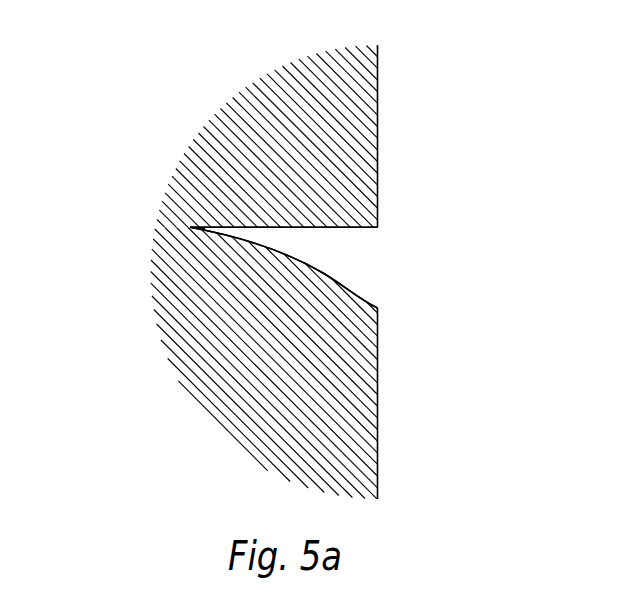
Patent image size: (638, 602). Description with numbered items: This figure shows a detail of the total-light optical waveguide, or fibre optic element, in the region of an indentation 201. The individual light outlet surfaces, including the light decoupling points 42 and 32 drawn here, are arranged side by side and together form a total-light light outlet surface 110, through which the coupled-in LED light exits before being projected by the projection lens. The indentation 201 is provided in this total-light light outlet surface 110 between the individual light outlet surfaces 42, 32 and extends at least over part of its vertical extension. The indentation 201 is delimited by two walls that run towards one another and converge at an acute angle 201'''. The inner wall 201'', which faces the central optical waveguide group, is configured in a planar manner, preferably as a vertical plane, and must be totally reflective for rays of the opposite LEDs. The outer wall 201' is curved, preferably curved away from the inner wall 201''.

The light decoupling point 42 is at (378, 99).
The light decoupling point 32 is at (378, 430).
The total-light light outlet surface 110 is at (395, 388).
The indentation 201 is at (321, 267).
The outer wall 201' is at (355, 270).
The inner wall 201'' is at (331, 240).
The acute angle 201''' is at (136, 248).